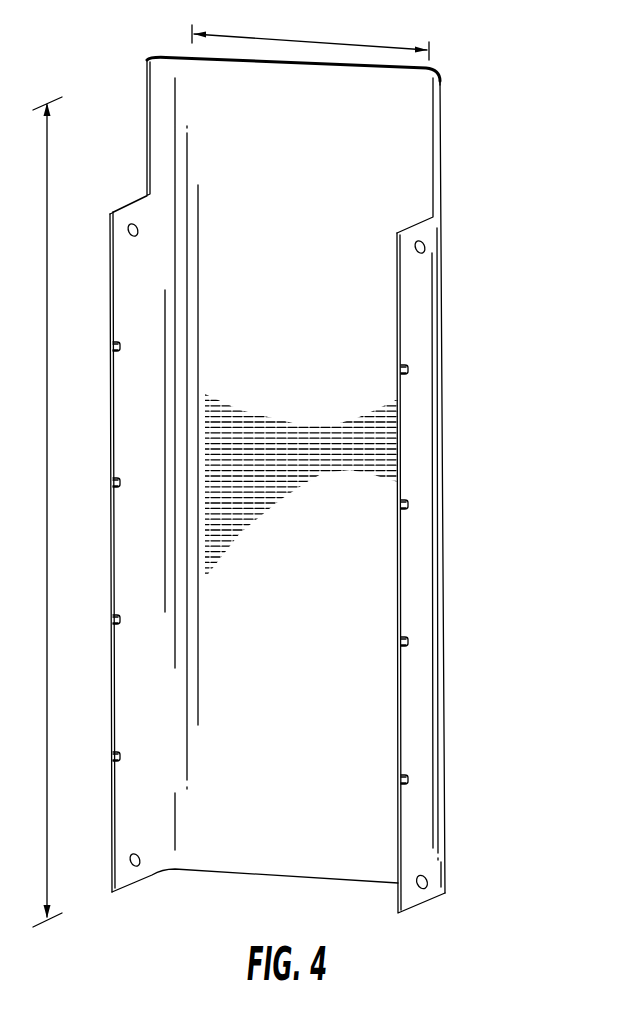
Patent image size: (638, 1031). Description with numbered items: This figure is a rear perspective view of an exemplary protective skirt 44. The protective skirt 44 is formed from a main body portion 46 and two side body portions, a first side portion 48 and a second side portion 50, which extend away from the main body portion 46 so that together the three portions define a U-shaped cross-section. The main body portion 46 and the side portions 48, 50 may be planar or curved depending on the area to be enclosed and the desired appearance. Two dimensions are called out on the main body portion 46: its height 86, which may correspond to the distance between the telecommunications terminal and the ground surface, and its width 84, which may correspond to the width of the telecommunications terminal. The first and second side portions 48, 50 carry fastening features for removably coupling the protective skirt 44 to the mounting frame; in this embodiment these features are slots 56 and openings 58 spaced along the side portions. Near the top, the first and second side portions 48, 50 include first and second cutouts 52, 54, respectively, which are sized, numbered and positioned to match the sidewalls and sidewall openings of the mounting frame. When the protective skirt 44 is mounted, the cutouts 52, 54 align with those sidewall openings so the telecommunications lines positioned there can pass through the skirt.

The protective skirt 44 is at (497, 451).
The main body portion 46 is at (321, 333).
The first side portion 48 is at (423, 307).
The second side portion 50 is at (127, 282).
The first cutout 52 is at (432, 153).
The second cutout 54 is at (147, 125).
The slots 56 is at (112, 347).
The openings 58 is at (130, 223).
The width of the main body portion 84 is at (310, 43).
The height of the main body portion 86 is at (46, 512).